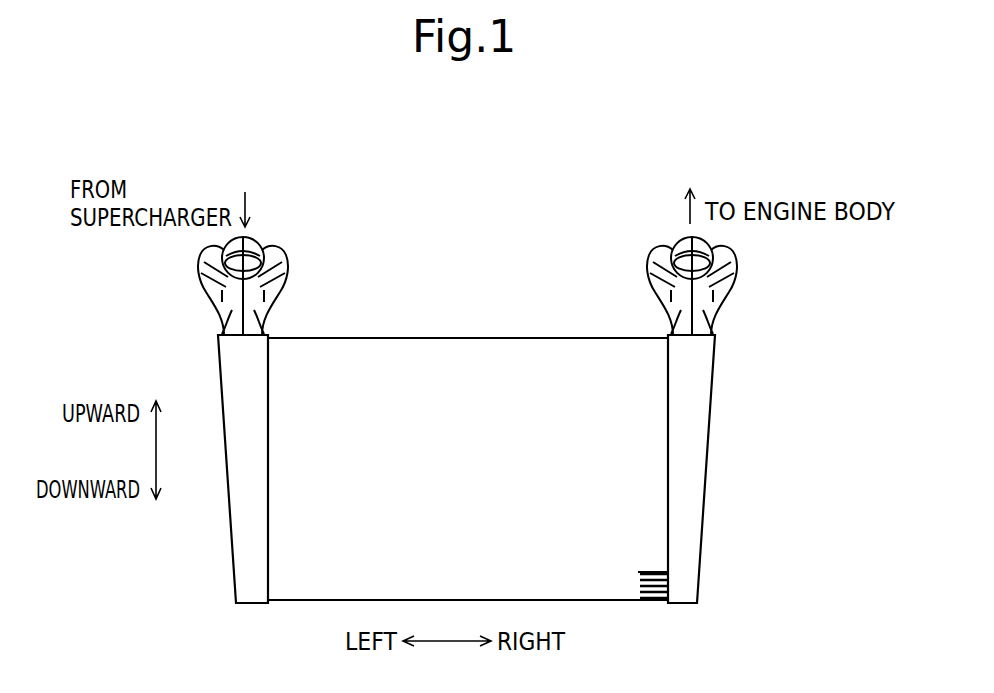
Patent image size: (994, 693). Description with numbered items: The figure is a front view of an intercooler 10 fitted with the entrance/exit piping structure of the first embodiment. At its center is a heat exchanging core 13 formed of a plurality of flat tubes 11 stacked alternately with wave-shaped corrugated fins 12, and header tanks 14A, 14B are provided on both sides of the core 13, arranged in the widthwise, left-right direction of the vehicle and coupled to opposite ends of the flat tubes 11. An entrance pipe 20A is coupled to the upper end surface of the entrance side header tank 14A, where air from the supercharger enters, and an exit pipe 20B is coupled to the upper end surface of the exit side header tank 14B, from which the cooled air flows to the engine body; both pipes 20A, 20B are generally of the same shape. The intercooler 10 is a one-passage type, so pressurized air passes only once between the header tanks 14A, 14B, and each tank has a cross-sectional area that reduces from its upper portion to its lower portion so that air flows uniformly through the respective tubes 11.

The intercooler 10 is at (443, 312).
The flat tube 11 is at (650, 574).
The fin 12 is at (644, 588).
The heat exchanging core 13 is at (455, 372).
The entrance side header tank 14A is at (244, 424).
The exit side header tank 14B is at (698, 452).
The entrance pipe 20A is at (291, 275).
The exit pipe 20B is at (645, 273).